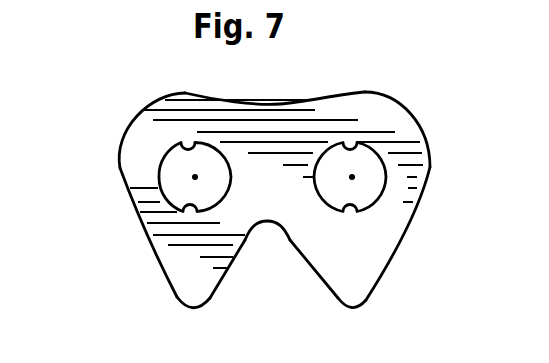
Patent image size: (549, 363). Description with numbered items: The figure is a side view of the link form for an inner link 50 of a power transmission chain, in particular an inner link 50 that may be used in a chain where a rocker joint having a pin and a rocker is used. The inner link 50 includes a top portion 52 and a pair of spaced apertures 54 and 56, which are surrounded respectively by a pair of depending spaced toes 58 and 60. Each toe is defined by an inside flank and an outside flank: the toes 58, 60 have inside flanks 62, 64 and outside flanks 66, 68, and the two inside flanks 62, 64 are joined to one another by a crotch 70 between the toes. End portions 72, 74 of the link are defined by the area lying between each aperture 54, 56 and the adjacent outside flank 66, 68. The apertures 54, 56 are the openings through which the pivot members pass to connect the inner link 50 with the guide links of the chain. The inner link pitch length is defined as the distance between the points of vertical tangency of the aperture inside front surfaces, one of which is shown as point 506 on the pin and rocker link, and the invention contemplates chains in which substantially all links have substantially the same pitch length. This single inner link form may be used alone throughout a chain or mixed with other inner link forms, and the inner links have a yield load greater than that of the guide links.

The inner link 50 is at (129, 103).
The top portion 52 is at (290, 102).
The aperture 54 is at (182, 145).
The aperture 56 is at (367, 146).
The toe 58 is at (190, 288).
The toe 60 is at (357, 297).
The inside flank 62 is at (227, 278).
The inside flank 64 is at (322, 285).
The outside flank 66 is at (150, 248).
The outside flank 68 is at (402, 233).
The crotch 70 is at (287, 244).
The end portion 72 is at (133, 155).
The end portion 74 is at (415, 150).
The point of vertical tangency 506 is at (193, 177).